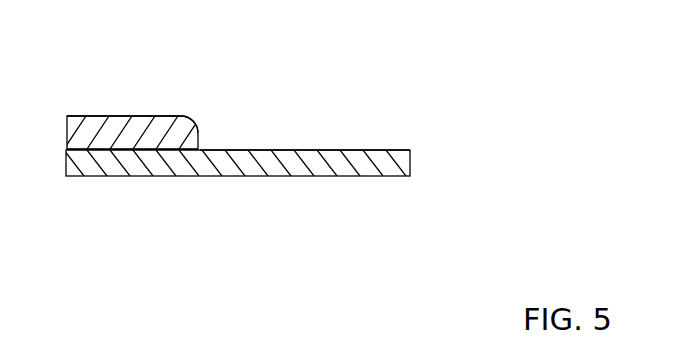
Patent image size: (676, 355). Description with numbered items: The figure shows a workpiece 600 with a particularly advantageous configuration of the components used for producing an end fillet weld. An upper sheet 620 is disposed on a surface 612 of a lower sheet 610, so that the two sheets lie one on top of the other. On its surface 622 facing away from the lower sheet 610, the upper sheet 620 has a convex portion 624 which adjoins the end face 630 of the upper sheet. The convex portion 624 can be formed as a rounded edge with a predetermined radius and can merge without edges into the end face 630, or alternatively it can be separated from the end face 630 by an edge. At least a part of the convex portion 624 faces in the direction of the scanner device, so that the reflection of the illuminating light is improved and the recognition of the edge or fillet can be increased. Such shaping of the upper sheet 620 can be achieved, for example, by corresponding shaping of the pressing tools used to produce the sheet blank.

The workpiece 600 is at (490, 74).
The lower sheet 610 is at (282, 137).
The surface of the lower sheet 612 is at (275, 150).
The upper sheet 620 is at (127, 91).
The surface of the upper sheet 622 is at (110, 116).
The convex portion 624 is at (192, 116).
The end face 630 is at (194, 140).